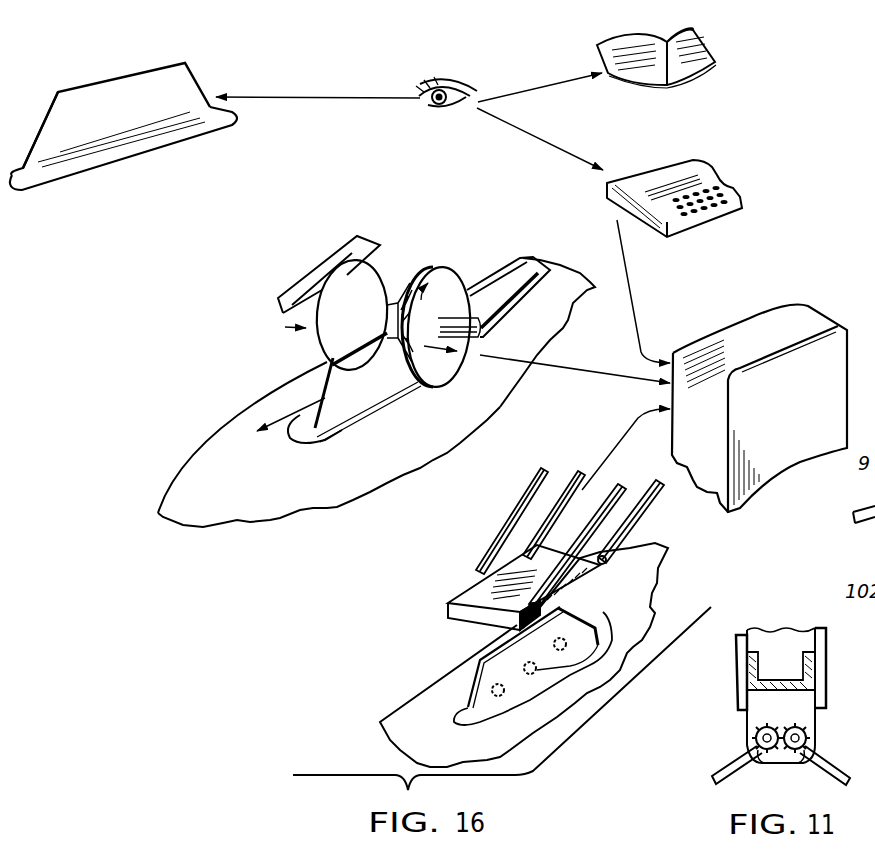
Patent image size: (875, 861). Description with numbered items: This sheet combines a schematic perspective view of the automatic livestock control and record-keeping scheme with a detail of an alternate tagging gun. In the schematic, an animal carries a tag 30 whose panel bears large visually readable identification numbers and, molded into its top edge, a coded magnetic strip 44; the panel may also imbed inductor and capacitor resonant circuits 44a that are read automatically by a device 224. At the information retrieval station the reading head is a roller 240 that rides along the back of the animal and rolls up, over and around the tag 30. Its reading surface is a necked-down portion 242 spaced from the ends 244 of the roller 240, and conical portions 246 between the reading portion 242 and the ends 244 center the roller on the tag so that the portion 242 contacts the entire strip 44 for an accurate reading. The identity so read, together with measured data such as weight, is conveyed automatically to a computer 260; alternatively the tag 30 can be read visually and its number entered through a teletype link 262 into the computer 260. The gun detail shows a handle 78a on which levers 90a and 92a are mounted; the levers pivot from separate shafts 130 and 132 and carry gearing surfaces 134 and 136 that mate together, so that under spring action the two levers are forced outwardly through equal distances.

In FIG. 16, the tag 30 is at (127, 153).
In FIG. 16, the magnetic strip 44 is at (328, 352).
In FIG. 16, the inductor and capacitor resonant circuits 44a is at (566, 643).
In FIG. 16, the reading device 224 is at (497, 590).
In FIG. 16, the roller 240 is at (367, 270).
In FIG. 16, the necked-down portion 242 is at (409, 290).
In FIG. 16, the ends of the roller 244 is at (320, 338).
In FIG. 16, the conical portions 246 is at (342, 302).
In FIG. 16, the computer 260 is at (795, 292).
In FIG. 16, the teletype link 262 is at (720, 164).
In FIG. 11, the handle 78a is at (757, 688).
In FIG. 11, the shaft 132 is at (770, 733).
In FIG. 11, the shaft 130 is at (800, 731).
In FIG. 11, the lever 92a is at (720, 768).
In FIG. 11, the lever 90a is at (830, 768).
In FIG. 11, the gearing surface 136 is at (764, 757).
In FIG. 11, the gearing surface 134 is at (792, 757).